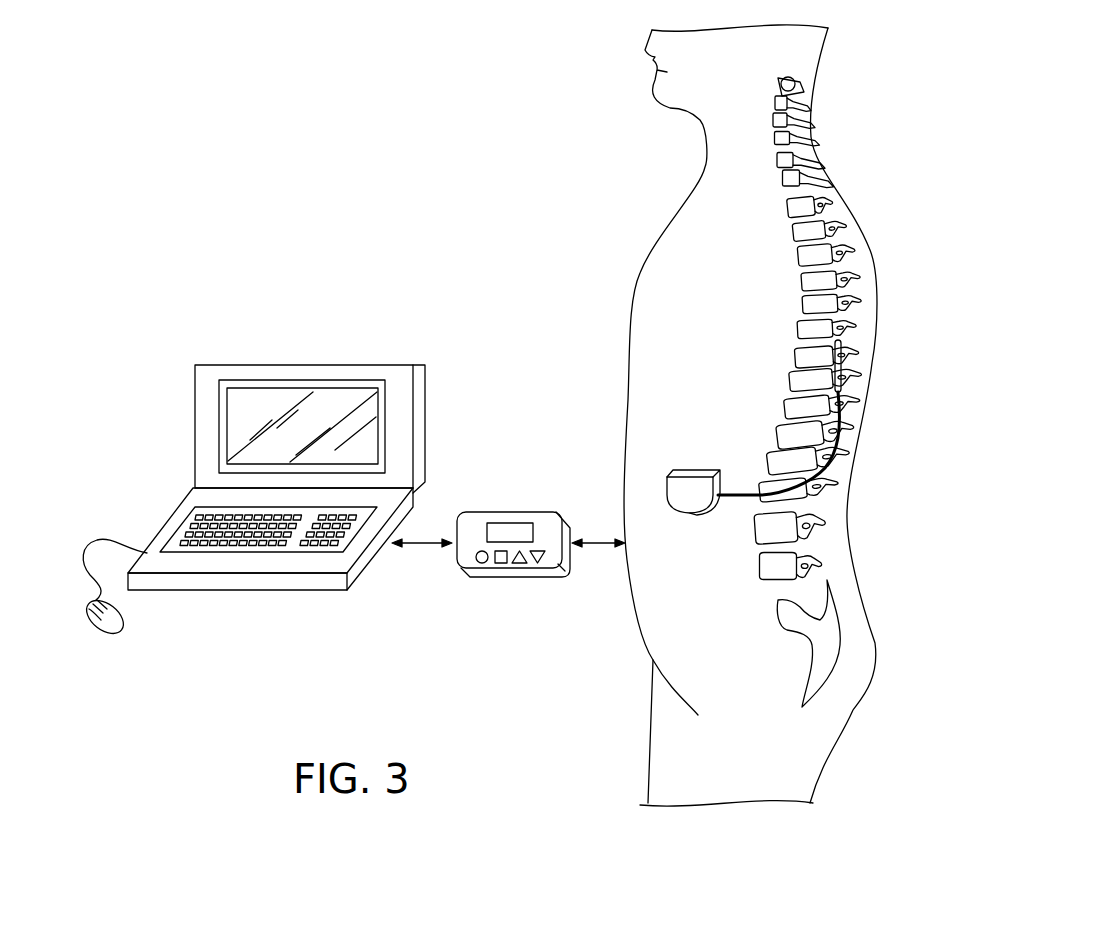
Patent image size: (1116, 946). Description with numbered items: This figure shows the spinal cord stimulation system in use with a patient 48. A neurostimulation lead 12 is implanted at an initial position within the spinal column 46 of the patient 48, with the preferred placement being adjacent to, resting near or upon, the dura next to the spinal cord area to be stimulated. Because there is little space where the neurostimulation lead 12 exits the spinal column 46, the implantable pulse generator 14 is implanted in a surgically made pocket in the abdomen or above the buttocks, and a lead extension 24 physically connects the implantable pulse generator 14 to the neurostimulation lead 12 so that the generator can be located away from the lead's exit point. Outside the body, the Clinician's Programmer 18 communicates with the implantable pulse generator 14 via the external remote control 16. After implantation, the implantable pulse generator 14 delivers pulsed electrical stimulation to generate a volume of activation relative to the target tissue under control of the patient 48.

The Clinician's Programmer 18 is at (289, 357).
The external remote control 16 is at (537, 486).
The patient 48 is at (643, 283).
The spinal column 46 is at (800, 340).
The neurostimulation lead 12 is at (850, 367).
The lead extension 24 is at (842, 447).
The implantable pulse generator 14 is at (693, 500).